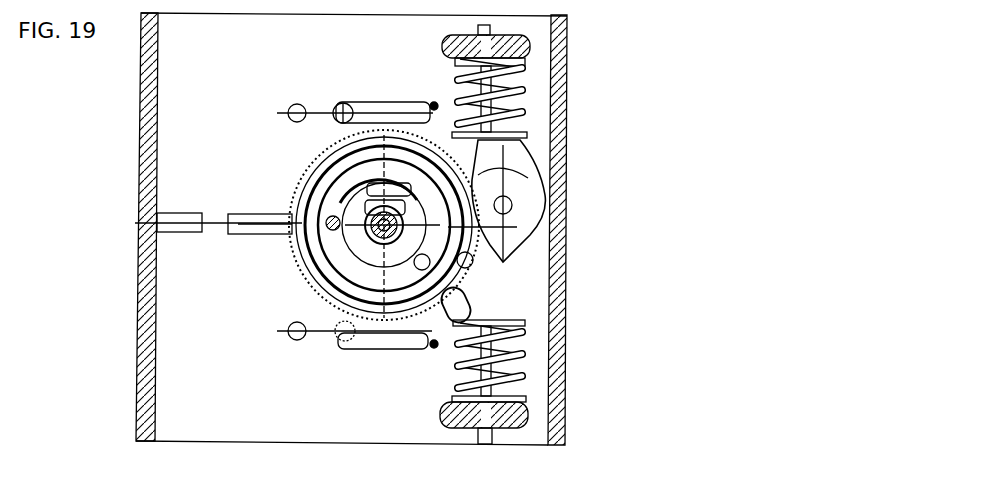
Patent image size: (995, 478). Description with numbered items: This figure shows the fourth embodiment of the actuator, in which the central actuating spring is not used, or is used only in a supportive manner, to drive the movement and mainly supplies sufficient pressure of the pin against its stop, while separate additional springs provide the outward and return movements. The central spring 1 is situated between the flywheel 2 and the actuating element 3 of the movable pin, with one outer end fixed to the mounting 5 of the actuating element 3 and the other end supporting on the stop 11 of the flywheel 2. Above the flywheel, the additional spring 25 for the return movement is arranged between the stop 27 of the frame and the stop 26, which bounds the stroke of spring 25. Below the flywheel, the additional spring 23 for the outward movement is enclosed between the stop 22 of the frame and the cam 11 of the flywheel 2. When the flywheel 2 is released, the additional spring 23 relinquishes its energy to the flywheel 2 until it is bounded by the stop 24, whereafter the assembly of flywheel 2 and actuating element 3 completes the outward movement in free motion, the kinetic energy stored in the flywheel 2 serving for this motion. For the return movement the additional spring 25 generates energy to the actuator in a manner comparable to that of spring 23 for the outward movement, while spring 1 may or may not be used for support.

The spring 1 is at (432, 152).
The flywheel 2 is at (398, 317).
The actuating element 3 is at (437, 191).
The mounting 5 is at (412, 202).
The stop of flywheel 11 is at (453, 305).
The stop of the frame 22 is at (515, 415).
The additional spring 23 is at (507, 347).
The stop 24 is at (485, 442).
The additional spring 25 is at (512, 95).
The stop 26 is at (485, 31).
The stop of frame 27 is at (507, 50).